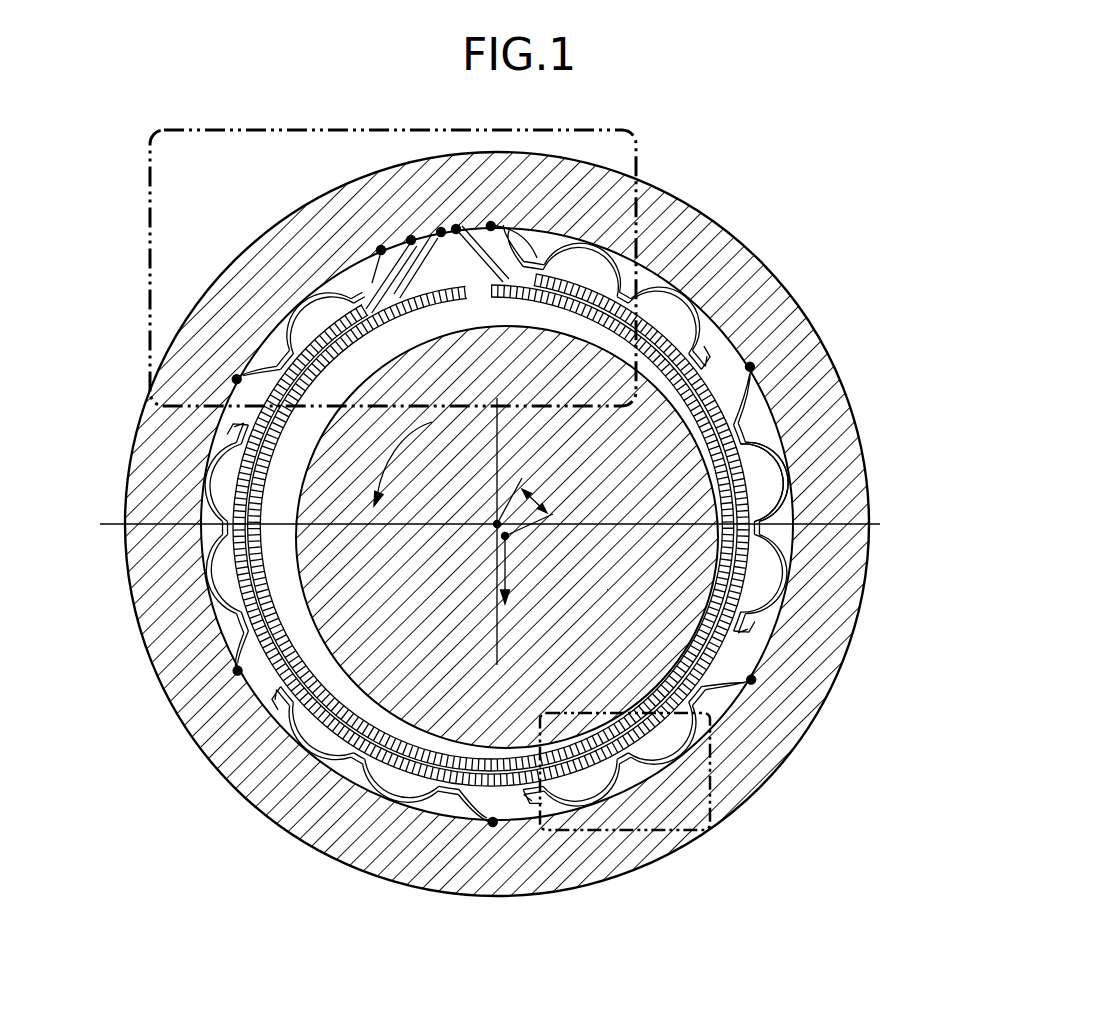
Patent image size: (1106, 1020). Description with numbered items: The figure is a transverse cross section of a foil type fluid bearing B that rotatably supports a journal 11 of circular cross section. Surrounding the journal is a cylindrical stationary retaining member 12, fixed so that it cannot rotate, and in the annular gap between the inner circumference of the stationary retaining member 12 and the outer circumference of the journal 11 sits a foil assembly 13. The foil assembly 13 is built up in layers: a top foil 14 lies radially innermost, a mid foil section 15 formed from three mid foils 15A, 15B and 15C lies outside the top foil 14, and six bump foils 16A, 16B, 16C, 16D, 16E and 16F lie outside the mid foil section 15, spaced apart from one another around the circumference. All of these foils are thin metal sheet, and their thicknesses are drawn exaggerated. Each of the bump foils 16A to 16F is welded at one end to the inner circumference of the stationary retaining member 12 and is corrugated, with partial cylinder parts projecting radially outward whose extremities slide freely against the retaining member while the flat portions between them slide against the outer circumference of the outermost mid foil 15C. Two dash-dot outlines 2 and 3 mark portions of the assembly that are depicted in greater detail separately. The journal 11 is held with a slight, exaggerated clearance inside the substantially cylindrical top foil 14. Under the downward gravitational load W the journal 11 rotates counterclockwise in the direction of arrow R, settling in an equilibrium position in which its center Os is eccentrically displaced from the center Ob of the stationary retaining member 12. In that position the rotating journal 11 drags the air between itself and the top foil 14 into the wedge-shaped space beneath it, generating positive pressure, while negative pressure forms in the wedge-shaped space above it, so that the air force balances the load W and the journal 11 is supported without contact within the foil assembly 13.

The foil type fluid bearing B is at (846, 228).
The region shown enlarged in FIG. 2 is at (645, 168).
The region shown enlarged in FIG. 3 is at (722, 800).
The journal 11 is at (507, 537).
The stationary retaining member 12 is at (305, 223).
The foil assembly 13 is at (686, 395).
The top foil 14 is at (460, 290).
The mid foil section 15 is at (967, 455).
The mid foil 15A is at (752, 607).
The mid foil 15B is at (768, 555).
The mid foil 15C is at (790, 492).
The bump foil 16A is at (317, 288).
The bump foil 16B is at (215, 447).
The bump foil 16C is at (290, 802).
The bump foil 16D is at (758, 690).
The bump foil 16E is at (783, 412).
The bump foil 16F is at (648, 283).
The center of the stationary retaining member Ob is at (495, 524).
The center of the journal Os is at (509, 541).
The load W is at (516, 590).
The direction of rotation R is at (402, 464).